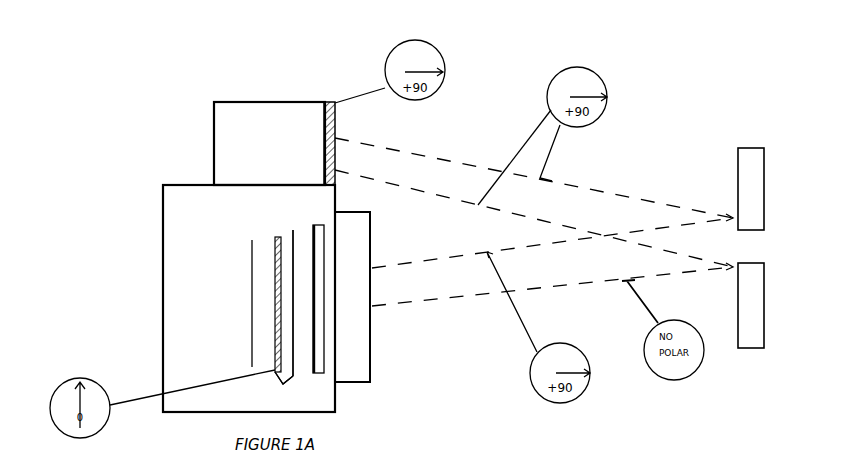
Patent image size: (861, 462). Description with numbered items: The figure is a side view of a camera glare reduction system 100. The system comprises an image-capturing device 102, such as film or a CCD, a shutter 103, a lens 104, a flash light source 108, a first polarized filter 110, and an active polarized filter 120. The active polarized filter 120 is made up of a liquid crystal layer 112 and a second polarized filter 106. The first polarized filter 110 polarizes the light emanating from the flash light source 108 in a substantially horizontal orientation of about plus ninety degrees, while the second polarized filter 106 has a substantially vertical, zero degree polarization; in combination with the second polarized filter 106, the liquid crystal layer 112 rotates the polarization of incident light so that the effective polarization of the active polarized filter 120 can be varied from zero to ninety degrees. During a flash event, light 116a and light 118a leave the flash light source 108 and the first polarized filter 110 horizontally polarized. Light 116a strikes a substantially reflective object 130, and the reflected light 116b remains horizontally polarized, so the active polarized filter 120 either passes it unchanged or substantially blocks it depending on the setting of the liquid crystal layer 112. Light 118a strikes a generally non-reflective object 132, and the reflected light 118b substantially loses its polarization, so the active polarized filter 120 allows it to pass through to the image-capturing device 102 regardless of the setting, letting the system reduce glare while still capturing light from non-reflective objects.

The camera glare reduction system 100 is at (568, 20).
The image-capturing device 102 is at (252, 252).
The shutter 103 is at (318, 375).
The lens 104 is at (357, 352).
The second polarized filter 106 is at (276, 236).
The flash light source 108 is at (262, 117).
The first polarized filter 110 is at (331, 100).
The liquid crystal layer 112 is at (293, 229).
The light 116a is at (636, 197).
The reflected light 116b is at (430, 261).
The light 118a is at (572, 230).
The light 118b is at (600, 283).
The active polarized filter 120 is at (280, 389).
The substantially reflective object 130 is at (764, 163).
The generally non-reflective object 132 is at (764, 295).